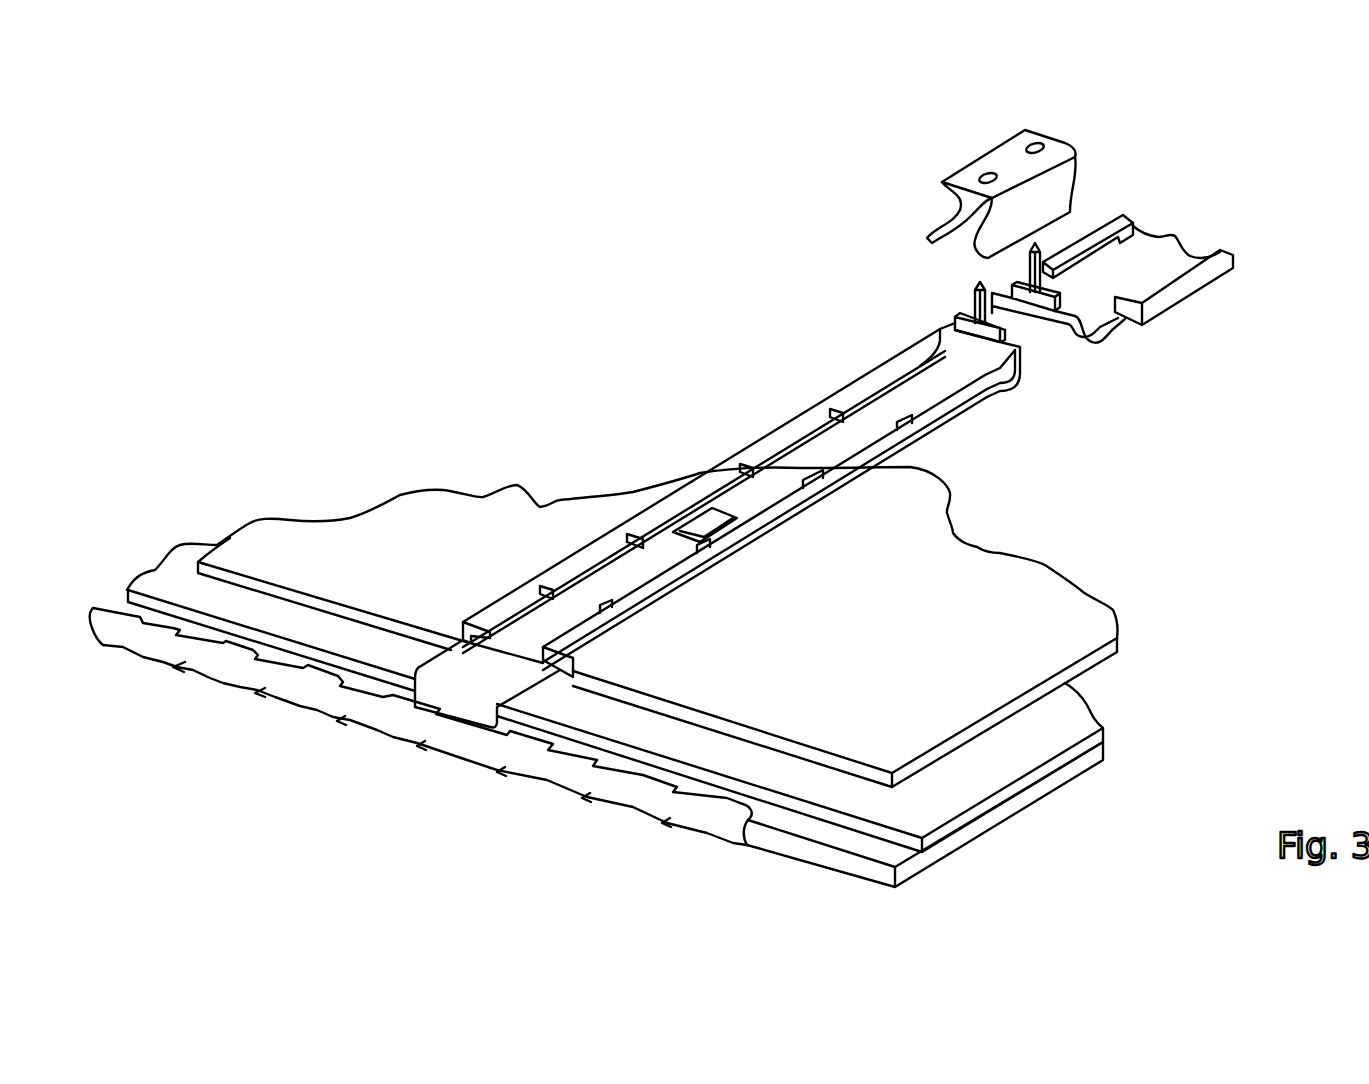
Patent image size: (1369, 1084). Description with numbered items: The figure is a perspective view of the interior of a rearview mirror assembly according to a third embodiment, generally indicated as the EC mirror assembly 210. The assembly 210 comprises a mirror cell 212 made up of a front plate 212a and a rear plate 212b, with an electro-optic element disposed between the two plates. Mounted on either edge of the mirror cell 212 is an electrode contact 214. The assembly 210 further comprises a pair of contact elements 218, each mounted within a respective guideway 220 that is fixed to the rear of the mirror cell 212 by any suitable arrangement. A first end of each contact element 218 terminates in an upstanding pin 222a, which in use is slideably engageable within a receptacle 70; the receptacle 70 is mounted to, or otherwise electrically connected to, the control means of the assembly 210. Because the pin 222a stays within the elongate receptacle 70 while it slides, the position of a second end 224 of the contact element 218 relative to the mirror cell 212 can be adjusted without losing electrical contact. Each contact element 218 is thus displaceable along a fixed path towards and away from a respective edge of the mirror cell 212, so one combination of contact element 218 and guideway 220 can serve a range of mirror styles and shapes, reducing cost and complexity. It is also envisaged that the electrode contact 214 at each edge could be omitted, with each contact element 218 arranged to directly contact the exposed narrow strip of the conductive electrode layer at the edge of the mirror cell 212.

The receptacle 70 is at (1000, 155).
The EC mirror assembly 210 is at (494, 347).
The mirror cell 212 is at (584, 688).
The front plate 212a is at (965, 830).
The rear plate 212b is at (1065, 753).
The electrode contact 214 is at (322, 697).
The contact element 218 is at (605, 573).
The guideway 220 is at (757, 527).
The upstanding pin 222a is at (973, 290).
The second end 224 is at (462, 697).